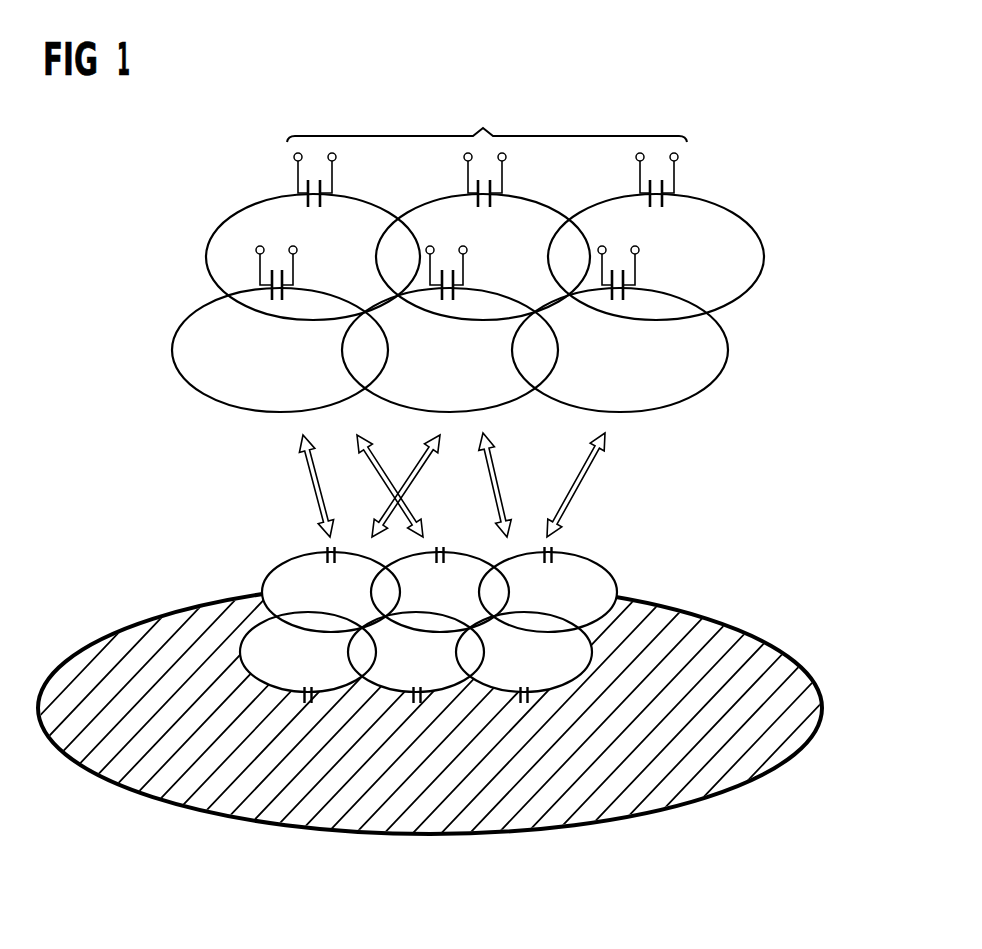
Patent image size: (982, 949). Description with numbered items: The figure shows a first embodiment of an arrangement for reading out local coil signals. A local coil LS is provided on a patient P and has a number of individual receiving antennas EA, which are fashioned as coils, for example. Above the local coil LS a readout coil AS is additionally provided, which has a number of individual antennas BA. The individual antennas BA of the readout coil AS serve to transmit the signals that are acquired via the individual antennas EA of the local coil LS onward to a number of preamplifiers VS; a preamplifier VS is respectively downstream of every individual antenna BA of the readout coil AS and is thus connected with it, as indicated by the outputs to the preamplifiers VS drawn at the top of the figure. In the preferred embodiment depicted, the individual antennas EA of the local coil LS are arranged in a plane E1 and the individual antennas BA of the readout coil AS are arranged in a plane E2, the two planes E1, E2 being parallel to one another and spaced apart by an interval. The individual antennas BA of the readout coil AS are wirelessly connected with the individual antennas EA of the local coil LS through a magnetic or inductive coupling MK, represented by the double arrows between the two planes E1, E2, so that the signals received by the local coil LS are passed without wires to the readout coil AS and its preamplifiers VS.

The readout coil AS is at (430, 253).
The individual antennas of the readout coil BA is at (468, 282).
The preamplifiers VS is at (487, 118).
The plane of the readout coil antennas E2 is at (776, 317).
The magnetic or inductive coupling MK is at (527, 485).
The local coil LS is at (412, 625).
The individual receiving antennas of the local coil EA is at (428, 625).
The plane of the local coil antennas E1 is at (598, 648).
The patient P is at (764, 621).